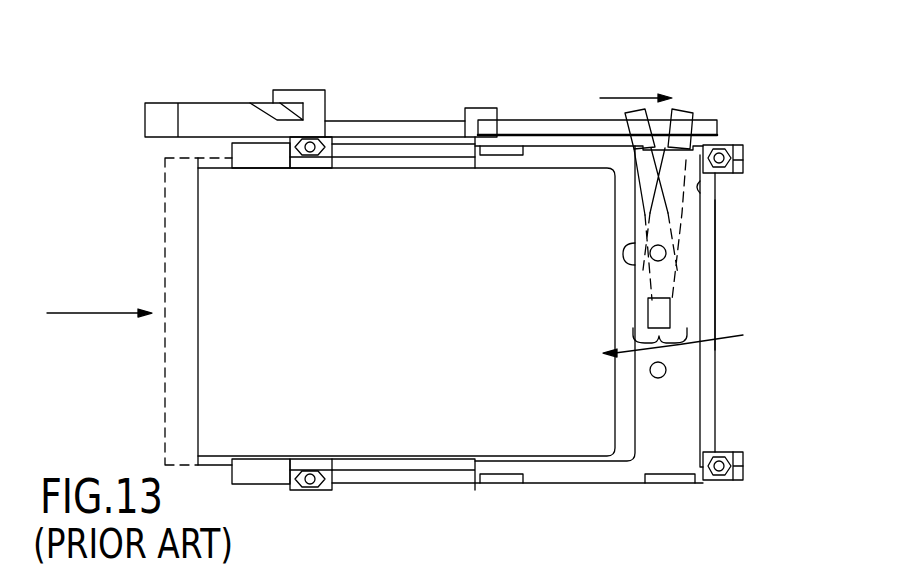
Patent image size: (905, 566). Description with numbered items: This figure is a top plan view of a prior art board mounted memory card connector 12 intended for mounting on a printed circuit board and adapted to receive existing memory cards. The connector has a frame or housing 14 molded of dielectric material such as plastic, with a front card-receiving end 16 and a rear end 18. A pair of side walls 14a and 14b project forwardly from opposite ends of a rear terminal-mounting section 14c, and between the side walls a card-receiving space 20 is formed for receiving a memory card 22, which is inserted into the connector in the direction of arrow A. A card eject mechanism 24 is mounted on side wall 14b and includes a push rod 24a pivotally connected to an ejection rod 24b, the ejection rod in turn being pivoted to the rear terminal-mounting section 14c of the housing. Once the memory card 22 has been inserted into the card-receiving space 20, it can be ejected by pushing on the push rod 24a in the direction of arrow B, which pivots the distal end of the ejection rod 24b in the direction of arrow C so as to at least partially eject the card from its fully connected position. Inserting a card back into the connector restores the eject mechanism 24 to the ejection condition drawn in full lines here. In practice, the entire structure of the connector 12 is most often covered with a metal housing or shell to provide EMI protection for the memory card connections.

The board mounted memory card connector 12 is at (737, 122).
The frame or housing 14 is at (560, 492).
The side wall 14a is at (376, 484).
The side wall 14b is at (348, 137).
The rear terminal-mounting section 14c is at (685, 415).
The front card-receiving end 16 is at (155, 388).
The rear end 18 is at (712, 277).
The card-receiving space 20 is at (393, 382).
The memory card 22 is at (208, 278).
The card eject mechanism 24 is at (518, 100).
The push rod 24a is at (145, 117).
The ejection rod 24b is at (700, 228).
The card insertion direction arrow A is at (94, 339).
The push rod pushing direction arrow B is at (618, 95).
The ejection rod pivoting direction arrow C is at (678, 357).